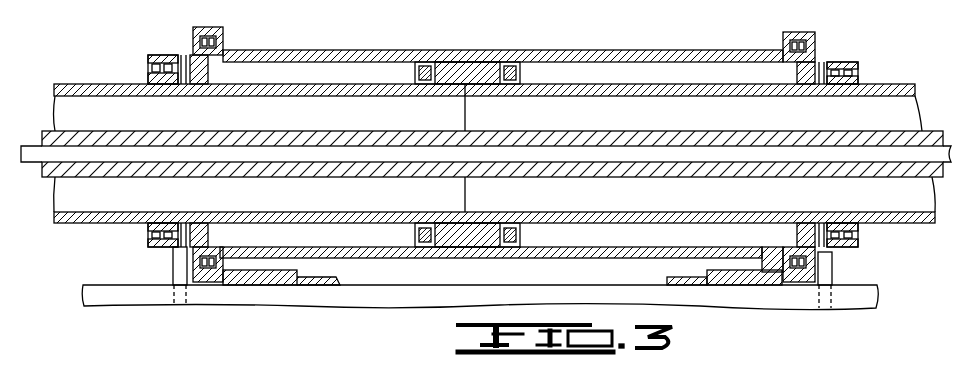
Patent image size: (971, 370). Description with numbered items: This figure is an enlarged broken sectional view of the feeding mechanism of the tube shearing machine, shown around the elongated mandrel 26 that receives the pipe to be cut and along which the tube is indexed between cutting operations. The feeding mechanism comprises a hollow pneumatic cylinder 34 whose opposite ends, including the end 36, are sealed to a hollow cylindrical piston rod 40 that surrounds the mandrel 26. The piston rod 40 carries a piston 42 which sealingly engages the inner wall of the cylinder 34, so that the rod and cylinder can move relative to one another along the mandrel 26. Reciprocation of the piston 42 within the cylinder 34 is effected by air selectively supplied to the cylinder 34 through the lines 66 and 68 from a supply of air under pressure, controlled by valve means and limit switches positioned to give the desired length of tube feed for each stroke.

The mandrel 26 is at (921, 131).
The pneumatic cylinder 34 is at (283, 50).
The cylinder end 36 is at (188, 55).
The piston rod 40 is at (900, 224).
The piston 42 is at (465, 247).
The air line 66 is at (830, 278).
The air line 68 is at (173, 264).